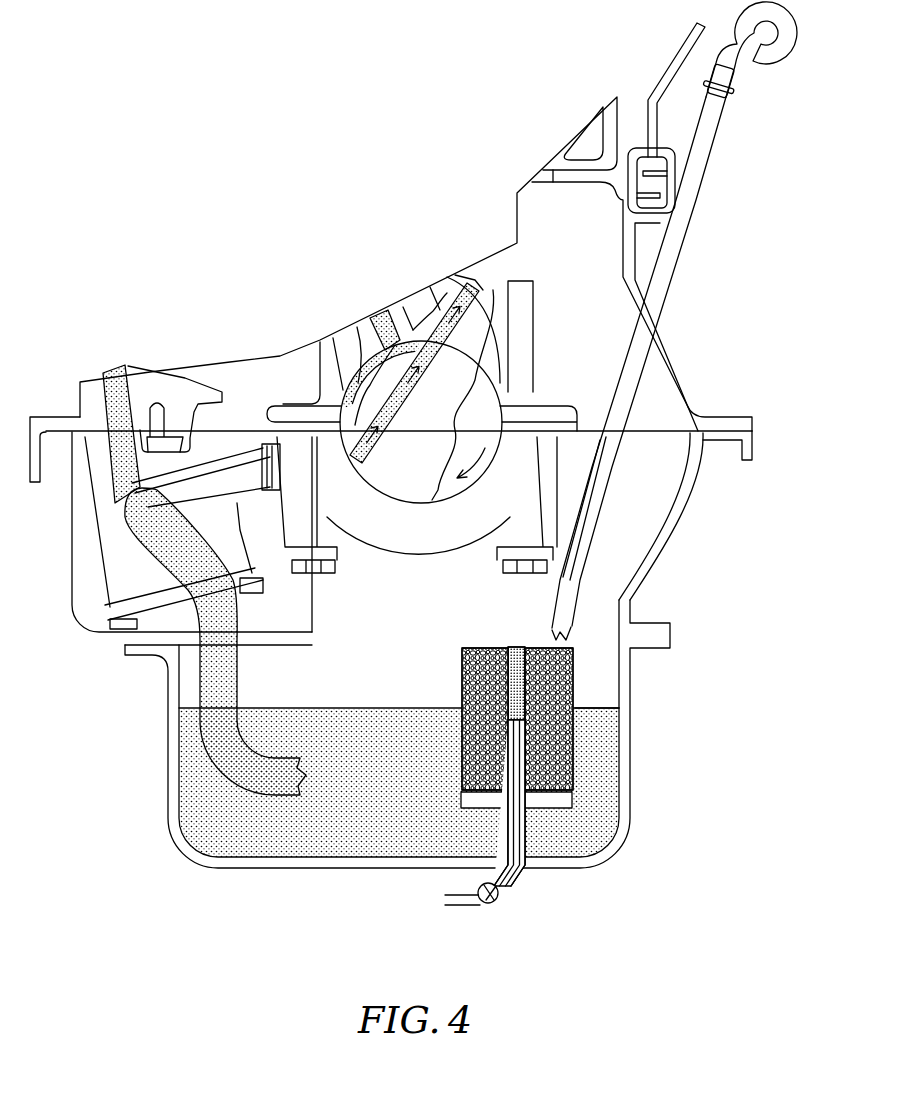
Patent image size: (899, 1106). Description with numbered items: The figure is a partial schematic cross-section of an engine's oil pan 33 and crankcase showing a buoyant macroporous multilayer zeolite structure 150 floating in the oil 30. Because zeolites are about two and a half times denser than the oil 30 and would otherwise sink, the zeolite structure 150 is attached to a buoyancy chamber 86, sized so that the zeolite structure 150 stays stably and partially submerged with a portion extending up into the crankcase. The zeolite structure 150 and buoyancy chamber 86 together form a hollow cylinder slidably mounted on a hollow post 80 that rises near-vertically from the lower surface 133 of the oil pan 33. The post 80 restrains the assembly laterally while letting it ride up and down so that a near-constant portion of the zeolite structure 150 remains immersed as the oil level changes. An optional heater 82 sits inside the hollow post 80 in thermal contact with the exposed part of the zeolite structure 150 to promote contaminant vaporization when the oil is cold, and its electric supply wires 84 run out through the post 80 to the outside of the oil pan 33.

The oil 30 is at (592, 752).
The oil pan 33 is at (168, 802).
The hollow post 80 is at (525, 836).
The heater 82 is at (518, 647).
The electric supply wires 84 is at (497, 903).
The buoyancy chamber 86 is at (565, 800).
The lower surface 133 is at (308, 845).
The macroporous multilayer zeolite structure 150 is at (568, 722).